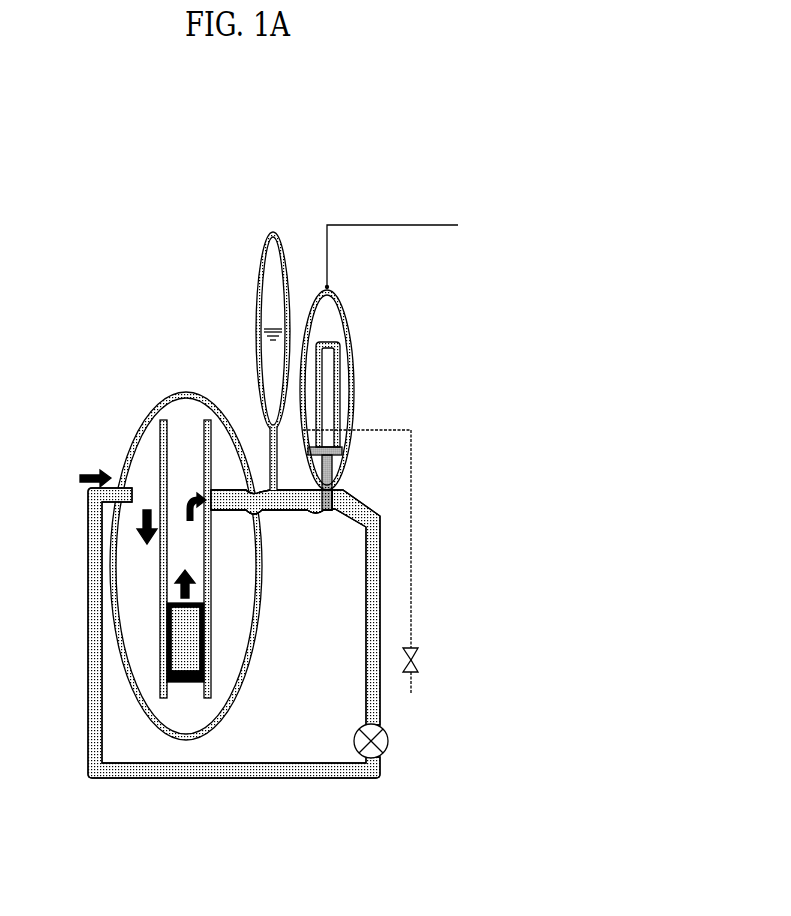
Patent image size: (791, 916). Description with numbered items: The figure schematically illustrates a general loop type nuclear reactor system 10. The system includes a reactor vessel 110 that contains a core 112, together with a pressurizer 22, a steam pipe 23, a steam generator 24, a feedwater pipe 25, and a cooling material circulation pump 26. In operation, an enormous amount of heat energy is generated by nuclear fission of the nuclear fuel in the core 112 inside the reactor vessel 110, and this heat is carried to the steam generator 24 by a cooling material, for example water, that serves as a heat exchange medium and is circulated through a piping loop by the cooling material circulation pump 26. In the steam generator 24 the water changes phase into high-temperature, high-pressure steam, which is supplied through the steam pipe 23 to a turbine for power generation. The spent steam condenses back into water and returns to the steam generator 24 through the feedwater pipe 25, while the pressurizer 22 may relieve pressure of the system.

The nuclear reactor system 10 is at (53, 221).
The reactor vessel 110 is at (138, 432).
The core 112 is at (185, 647).
The pressurizer 22 is at (259, 272).
The steam pipe 23 is at (398, 225).
The steam generator 24 is at (357, 325).
The feedwater pipe 25 is at (412, 505).
The cooling material circulation pump 26 is at (389, 740).